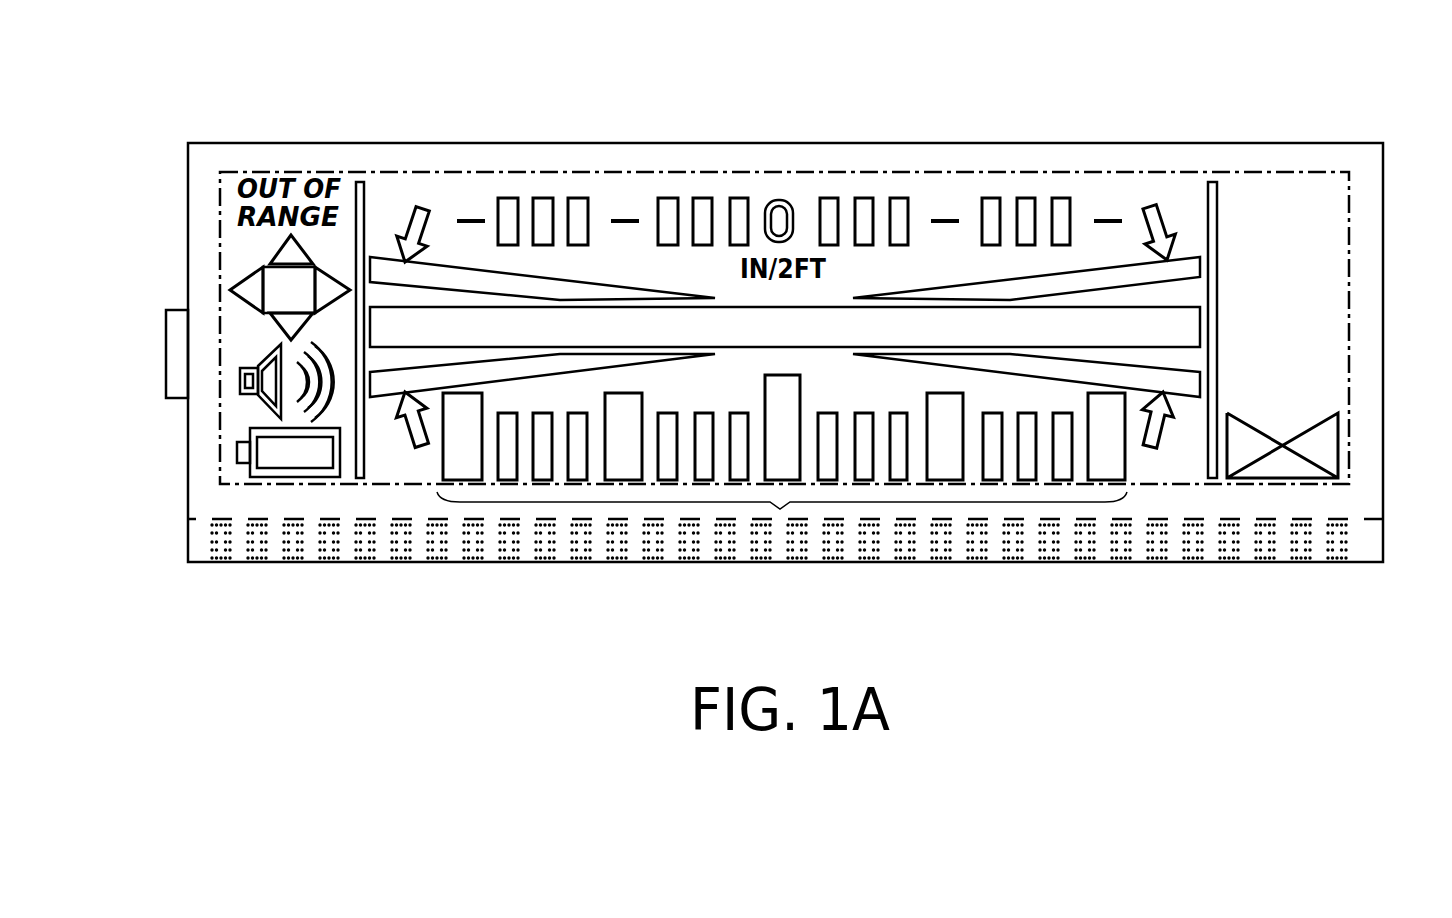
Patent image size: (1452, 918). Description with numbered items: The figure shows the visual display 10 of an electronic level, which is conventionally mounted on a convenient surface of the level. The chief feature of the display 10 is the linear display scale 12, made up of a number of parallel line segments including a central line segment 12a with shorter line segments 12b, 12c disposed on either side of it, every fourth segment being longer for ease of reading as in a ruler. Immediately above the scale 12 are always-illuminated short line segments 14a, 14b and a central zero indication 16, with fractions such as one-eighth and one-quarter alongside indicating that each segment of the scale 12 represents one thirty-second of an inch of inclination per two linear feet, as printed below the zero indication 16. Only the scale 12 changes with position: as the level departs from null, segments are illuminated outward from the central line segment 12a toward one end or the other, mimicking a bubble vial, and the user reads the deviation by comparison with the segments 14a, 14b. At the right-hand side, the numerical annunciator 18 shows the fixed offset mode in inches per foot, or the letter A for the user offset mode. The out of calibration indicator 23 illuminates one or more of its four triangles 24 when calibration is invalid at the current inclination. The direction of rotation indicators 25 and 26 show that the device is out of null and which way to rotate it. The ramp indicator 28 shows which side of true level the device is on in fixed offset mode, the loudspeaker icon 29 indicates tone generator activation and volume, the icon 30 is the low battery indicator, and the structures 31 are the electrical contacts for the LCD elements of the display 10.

The visual display 10 is at (867, 143).
The linear display scale 12 is at (780, 510).
The central line segment 12a is at (776, 402).
The shorter line segment 12b is at (827, 422).
The shorter line segment 12c is at (862, 422).
The short line segment 14a is at (706, 198).
The short line segment 14b is at (740, 198).
The central "0" indication 16 is at (780, 200).
The numerical annunciator 18 is at (1334, 311).
The out of calibration indicator 23 is at (260, 256).
The triangles 24 is at (258, 300).
The direction of rotation indicator 25 is at (397, 228).
The direction of rotation indicator 26 is at (1170, 222).
The ramp indicator 28 is at (1320, 448).
The loudspeaker icon 29 is at (254, 406).
The low battery indicator 30 is at (292, 452).
The electrical contacts 31 is at (605, 540).